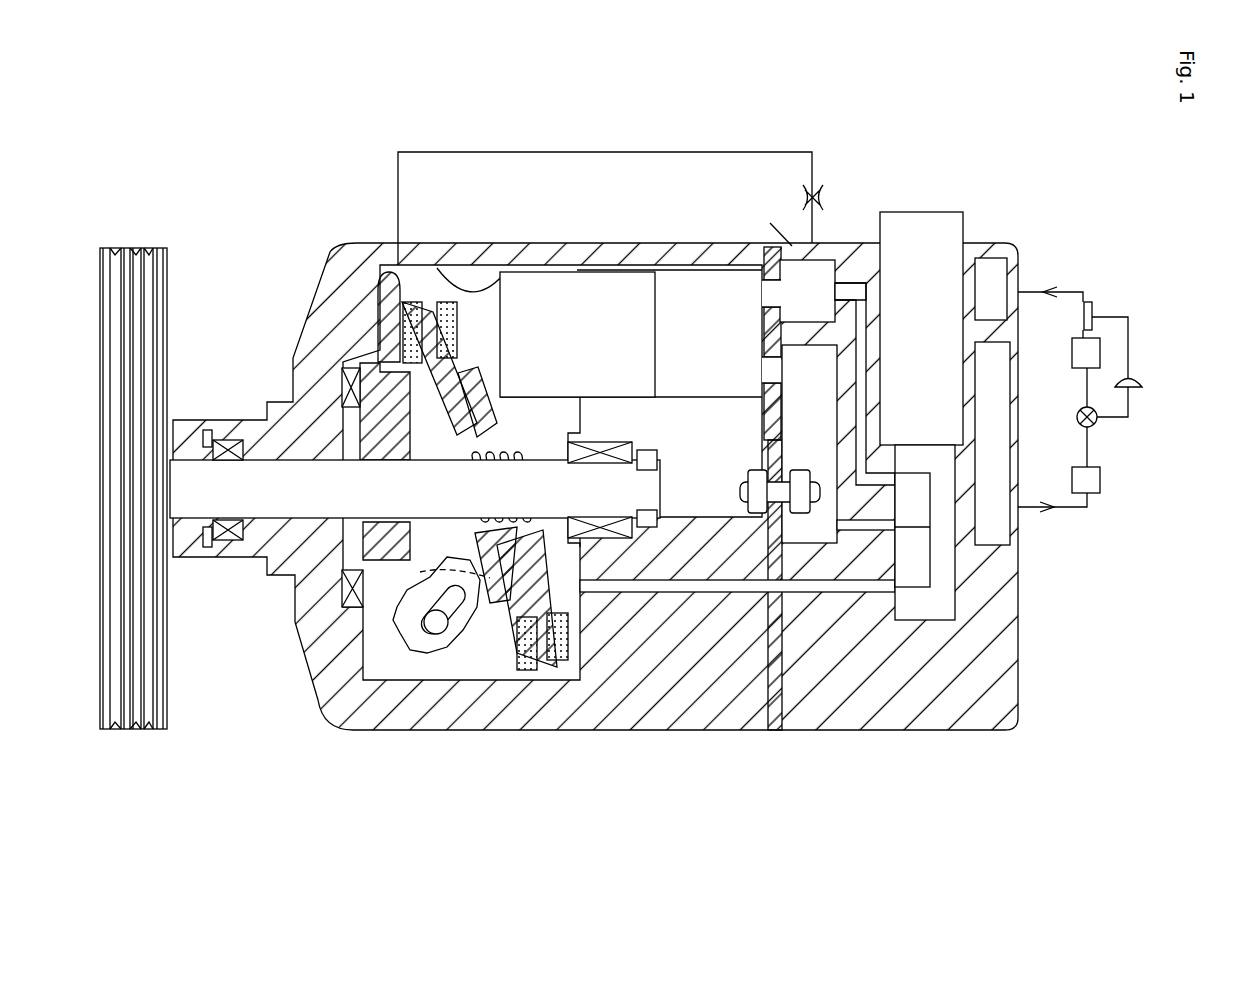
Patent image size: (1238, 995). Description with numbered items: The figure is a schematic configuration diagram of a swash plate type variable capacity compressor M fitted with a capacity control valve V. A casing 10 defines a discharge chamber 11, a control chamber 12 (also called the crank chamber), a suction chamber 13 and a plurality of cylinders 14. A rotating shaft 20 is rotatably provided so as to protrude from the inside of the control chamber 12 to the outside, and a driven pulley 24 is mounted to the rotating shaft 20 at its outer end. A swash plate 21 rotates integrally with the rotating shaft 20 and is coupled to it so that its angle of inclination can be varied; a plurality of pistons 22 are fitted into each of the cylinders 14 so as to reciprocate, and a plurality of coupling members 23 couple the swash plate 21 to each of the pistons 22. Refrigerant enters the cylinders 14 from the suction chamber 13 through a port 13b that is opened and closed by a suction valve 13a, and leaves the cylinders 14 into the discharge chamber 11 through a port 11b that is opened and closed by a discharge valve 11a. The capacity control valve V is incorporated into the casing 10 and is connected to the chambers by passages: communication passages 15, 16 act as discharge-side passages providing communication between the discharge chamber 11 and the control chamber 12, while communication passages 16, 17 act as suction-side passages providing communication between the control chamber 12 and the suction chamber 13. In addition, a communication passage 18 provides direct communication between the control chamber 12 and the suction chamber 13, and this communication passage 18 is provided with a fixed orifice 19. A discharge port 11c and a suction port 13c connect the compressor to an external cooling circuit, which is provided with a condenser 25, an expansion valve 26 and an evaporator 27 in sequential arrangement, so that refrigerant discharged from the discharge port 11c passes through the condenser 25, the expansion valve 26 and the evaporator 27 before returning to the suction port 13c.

The casing 10 is at (623, 242).
The discharge chamber 11 is at (792, 426).
The discharge valve 11a is at (787, 365).
The port 11b is at (770, 357).
The discharge port 11c is at (1022, 512).
The control chamber 12 is at (448, 679).
The suction chamber 13 is at (801, 304).
The suction valve 13a is at (760, 300).
The port 13b is at (772, 217).
The suction port 13c is at (1020, 292).
The cylinders 14 is at (697, 283).
The communication passage 15 is at (830, 490).
The communication passage 16 is at (822, 596).
The communication passage 17 is at (858, 283).
The communication passage 18 is at (745, 152).
The fixed orifice 19 is at (823, 197).
The rotating shaft 20 is at (320, 487).
The swash plate 21 is at (405, 300).
The pistons 22 is at (565, 302).
The coupling members 23 is at (523, 673).
The driven pulley 24 is at (162, 248).
The condenser 25 is at (1100, 478).
The expansion valve 26 is at (1100, 422).
The evaporator 27 is at (1093, 353).
The swash plate type variable capacity compressor M is at (363, 238).
The capacity control valve V is at (922, 212).